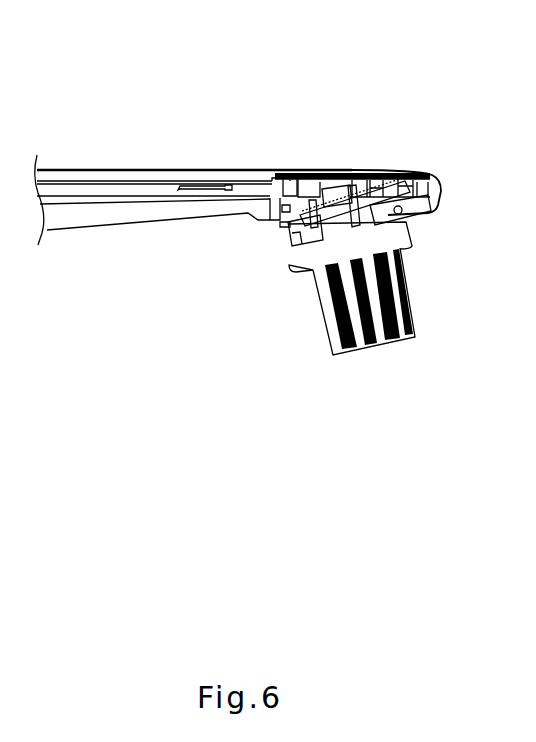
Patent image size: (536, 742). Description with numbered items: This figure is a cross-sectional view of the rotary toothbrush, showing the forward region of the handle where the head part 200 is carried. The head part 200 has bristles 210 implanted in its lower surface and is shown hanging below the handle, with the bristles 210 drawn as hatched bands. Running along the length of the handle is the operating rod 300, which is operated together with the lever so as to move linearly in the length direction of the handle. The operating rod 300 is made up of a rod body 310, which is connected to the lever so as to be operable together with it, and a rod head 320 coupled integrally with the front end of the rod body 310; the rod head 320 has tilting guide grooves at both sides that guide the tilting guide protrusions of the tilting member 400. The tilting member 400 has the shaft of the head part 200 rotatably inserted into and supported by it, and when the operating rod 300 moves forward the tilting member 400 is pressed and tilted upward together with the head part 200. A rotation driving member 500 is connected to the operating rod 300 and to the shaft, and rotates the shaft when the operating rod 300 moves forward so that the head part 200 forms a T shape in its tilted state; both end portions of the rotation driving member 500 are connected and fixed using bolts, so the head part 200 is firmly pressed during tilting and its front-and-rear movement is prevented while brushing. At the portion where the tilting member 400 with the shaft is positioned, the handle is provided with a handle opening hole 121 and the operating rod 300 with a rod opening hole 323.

The operating rod 300 is at (203, 64).
The rod body 310 is at (165, 188).
The rod head 320 is at (280, 170).
The rod opening hole 323 is at (382, 172).
The handle opening hole 121 is at (367, 170).
The rotation driving member 500 is at (400, 168).
The tilting member 400 is at (290, 226).
The head part 200 is at (300, 259).
The bristles 210 is at (403, 308).